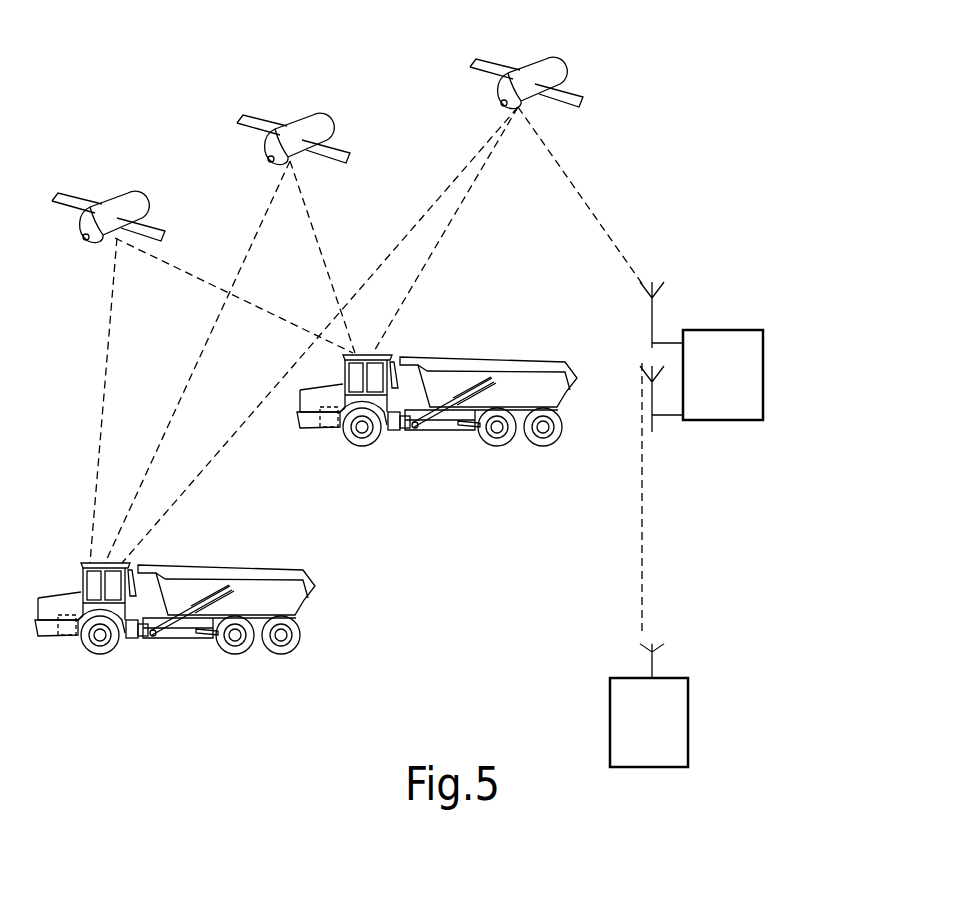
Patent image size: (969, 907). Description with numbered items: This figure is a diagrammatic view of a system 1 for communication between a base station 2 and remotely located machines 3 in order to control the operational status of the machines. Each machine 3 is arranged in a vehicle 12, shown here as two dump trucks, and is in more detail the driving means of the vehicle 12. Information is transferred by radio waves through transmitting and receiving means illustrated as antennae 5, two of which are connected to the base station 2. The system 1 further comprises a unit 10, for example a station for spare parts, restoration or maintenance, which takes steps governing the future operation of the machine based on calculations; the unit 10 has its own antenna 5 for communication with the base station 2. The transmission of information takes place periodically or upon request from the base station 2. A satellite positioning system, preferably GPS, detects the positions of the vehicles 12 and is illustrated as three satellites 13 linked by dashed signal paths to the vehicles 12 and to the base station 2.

The system 1 is at (658, 98).
The base station 2 is at (740, 378).
The machine 3 is at (328, 432).
The antennae 5 is at (663, 277).
The unit 10 is at (670, 722).
The vehicle 12 is at (566, 444).
The satellites 13 is at (113, 198).